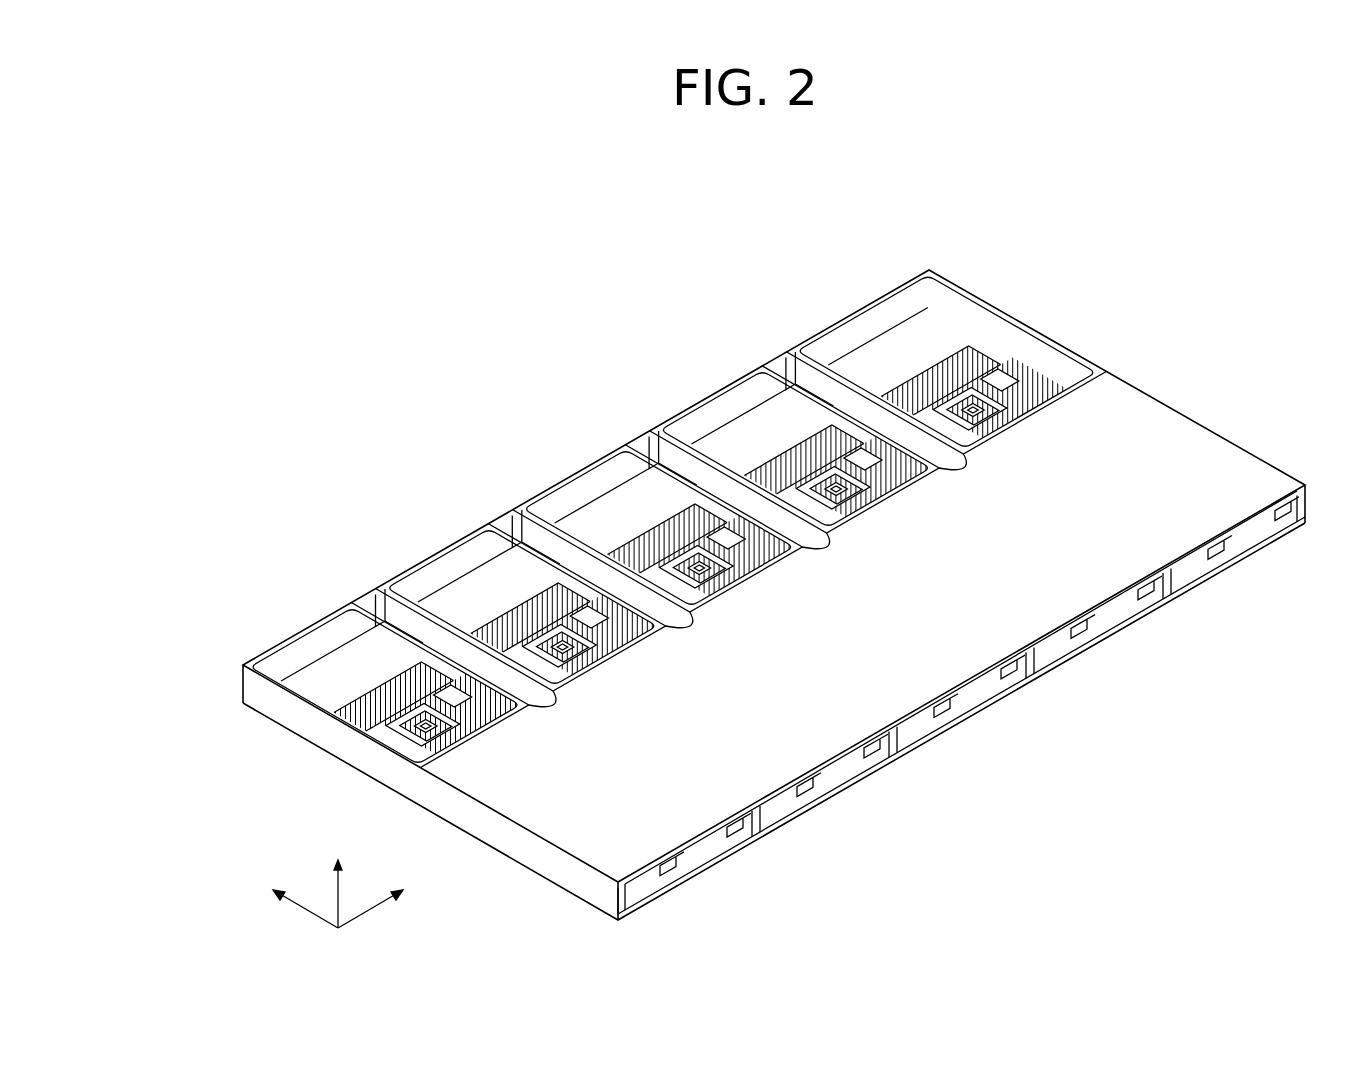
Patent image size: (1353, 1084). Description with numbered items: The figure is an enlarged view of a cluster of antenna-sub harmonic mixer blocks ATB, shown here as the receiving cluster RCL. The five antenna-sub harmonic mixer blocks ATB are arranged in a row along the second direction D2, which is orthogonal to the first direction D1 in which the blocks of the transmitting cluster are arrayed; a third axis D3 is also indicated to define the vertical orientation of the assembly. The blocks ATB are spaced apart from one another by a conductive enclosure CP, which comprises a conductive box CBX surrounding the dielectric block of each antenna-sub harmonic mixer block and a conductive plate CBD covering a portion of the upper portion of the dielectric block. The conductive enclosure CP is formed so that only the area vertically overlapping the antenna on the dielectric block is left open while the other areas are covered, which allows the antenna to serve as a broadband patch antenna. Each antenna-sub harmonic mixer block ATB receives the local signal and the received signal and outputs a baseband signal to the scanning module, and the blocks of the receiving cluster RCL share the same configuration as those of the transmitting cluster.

The receiving cluster RCL is at (1208, 240).
The conductive enclosure CP is at (140, 676).
The conductive box CBX is at (243, 683).
The conductive plate CBD is at (472, 791).
The antenna-sub harmonic mixer block ATB is at (367, 690).
The first direction D1 is at (385, 902).
The second direction D2 is at (292, 902).
The third direction D3 is at (340, 882).